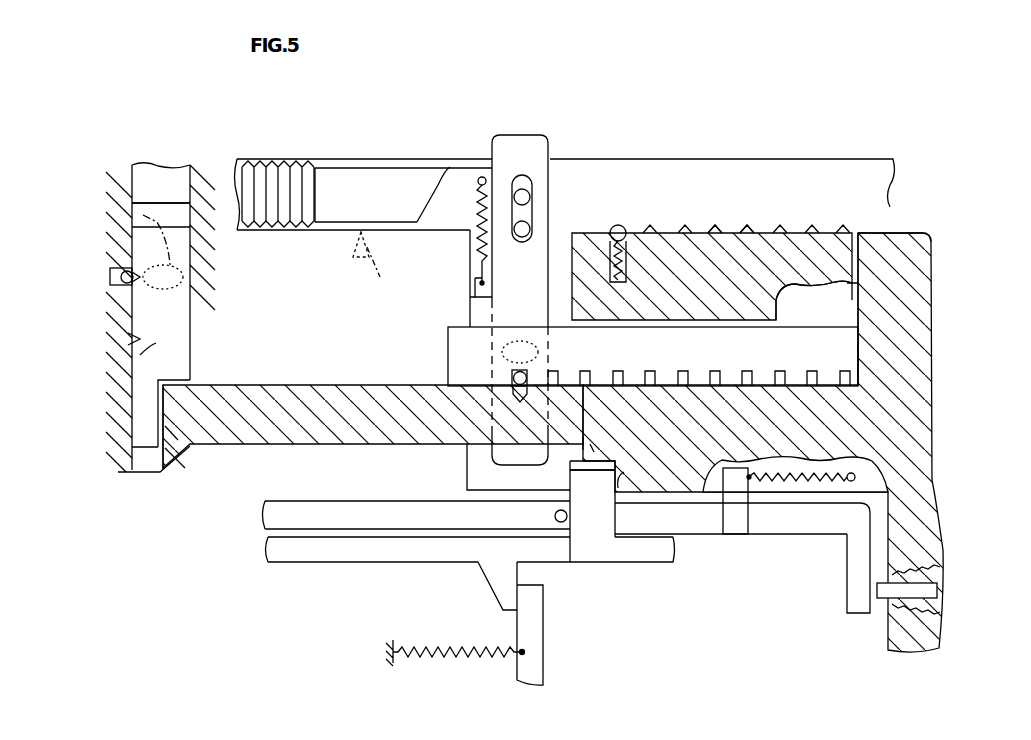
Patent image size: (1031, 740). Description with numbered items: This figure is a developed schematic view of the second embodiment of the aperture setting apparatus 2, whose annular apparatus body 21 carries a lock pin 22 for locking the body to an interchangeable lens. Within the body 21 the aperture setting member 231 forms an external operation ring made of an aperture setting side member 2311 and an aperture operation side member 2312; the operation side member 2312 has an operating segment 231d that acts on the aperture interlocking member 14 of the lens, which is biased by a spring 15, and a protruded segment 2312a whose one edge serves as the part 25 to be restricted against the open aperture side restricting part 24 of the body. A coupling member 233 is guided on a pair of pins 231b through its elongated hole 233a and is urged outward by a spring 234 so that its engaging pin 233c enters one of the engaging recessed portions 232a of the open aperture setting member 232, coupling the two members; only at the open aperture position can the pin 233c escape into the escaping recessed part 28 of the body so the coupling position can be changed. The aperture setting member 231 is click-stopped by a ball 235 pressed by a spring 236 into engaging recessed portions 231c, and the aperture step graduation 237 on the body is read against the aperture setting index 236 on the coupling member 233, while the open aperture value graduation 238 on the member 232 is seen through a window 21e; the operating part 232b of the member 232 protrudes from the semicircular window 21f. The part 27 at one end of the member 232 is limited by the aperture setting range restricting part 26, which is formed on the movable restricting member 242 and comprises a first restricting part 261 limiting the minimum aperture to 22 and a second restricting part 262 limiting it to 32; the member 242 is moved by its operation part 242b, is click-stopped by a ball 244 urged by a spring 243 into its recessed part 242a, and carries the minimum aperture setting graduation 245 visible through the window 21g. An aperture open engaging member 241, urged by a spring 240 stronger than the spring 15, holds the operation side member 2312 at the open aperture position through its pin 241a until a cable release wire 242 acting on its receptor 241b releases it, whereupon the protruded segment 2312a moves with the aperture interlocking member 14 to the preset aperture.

The aperture setting apparatus 2 is at (922, 230).
The aperture interlocking member 14 is at (532, 627).
The spring 15 is at (452, 654).
The apparatus body 21 is at (912, 341).
The window 21e is at (522, 340).
The semicircular window 21f is at (856, 290).
The window 21g is at (143, 215).
The lock pin 22 is at (163, 277).
The aperture setting range restricting part in the open aperture side 24 is at (613, 472).
The part to be restricted in the open aperture side 25 is at (618, 488).
The aperture setting range restricting part in the aperture setting side 26 is at (231, 306).
The first restricting part 261 is at (192, 328).
The second restricting part 262 is at (163, 407).
The part to be restricted in the aperture setting side 27 is at (448, 356).
The escaping recessed part 28 is at (518, 403).
The display value 32 is at (162, 339).
The aperture setting member 231 is at (330, 322).
The aperture setting side member 2311 is at (341, 213).
The aperture operation side member 2312 is at (345, 543).
The protruded segment 2312a is at (585, 517).
The pins 231b is at (516, 232).
The engaging recessed portions 231c is at (852, 293).
The operating segment 231d is at (557, 521).
The open aperture setting member 232 is at (738, 336).
The open aperture setting engaging recessed portions 232a is at (712, 333).
The operating part 232b is at (832, 305).
The coupling member 233 is at (543, 250).
The elongated hole 233a is at (523, 188).
The engaging pin 233c is at (513, 377).
The spring 234 is at (477, 212).
The ball 235 is at (620, 232).
The spring 236 is at (612, 253).
The aperture step graduation 237 is at (397, 182).
The open aperture value graduation 238 is at (758, 336).
The spring 240 is at (825, 482).
The aperture open engaging member 241 is at (742, 512).
The pin 241a is at (514, 563).
The receptor 241b is at (858, 562).
The aperture setting range restricting member 242 is at (140, 247).
The recessed part 242a is at (128, 338).
The operation part 242b is at (180, 203).
The spring 243 is at (112, 272).
The ball 244 is at (123, 287).
The minimum aperture setting graduation 245 is at (140, 355).